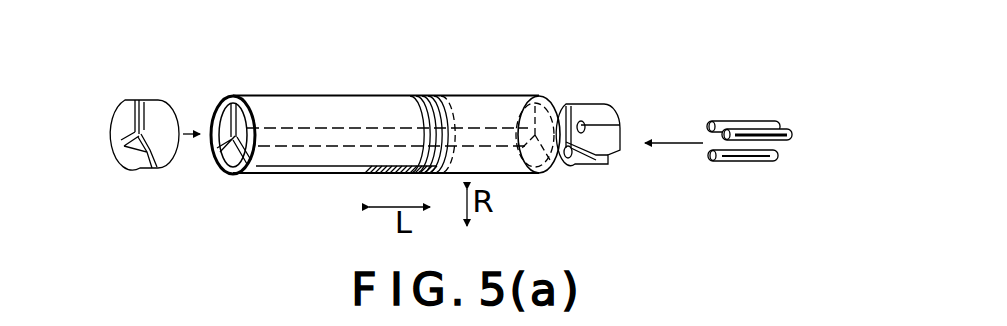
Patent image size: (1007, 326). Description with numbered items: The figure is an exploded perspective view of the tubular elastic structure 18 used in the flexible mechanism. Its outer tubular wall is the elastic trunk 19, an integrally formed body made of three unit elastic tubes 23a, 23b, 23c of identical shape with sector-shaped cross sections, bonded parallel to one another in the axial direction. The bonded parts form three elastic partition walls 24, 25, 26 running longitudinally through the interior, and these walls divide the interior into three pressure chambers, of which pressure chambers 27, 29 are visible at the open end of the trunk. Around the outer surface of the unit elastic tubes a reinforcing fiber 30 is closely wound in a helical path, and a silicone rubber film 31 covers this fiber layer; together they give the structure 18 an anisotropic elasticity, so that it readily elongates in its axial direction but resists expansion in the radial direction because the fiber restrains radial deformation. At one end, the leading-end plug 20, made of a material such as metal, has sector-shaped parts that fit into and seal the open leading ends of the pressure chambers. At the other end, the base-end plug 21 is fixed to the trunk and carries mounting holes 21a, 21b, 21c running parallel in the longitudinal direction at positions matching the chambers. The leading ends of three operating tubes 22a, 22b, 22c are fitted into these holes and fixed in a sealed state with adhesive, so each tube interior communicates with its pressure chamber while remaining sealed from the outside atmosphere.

The tubular elastic structure 18 is at (380, 96).
The elastic trunk 19 is at (425, 97).
The leading-end plug 20 is at (150, 101).
The base-end plug 21 is at (604, 95).
The mounting hole 21a is at (568, 160).
The mounting hole 21b is at (562, 126).
The mounting hole 21c is at (593, 127).
The operating tube 22a is at (760, 162).
The operating tube 22b is at (725, 121).
The operating tube 22c is at (788, 126).
The unit elastic tube 23a is at (228, 171).
The unit elastic tube 23b is at (222, 100).
The unit elastic tube 23c is at (254, 112).
The elastic partition wall 24 is at (248, 148).
The elastic partition wall 25 is at (212, 130).
The elastic partition wall 26 is at (248, 108).
The pressure chamber 27 is at (214, 153).
The pressure chamber 29 is at (268, 124).
The reinforcing fiber 30 is at (448, 118).
The silicone rubber film 31 is at (507, 157).